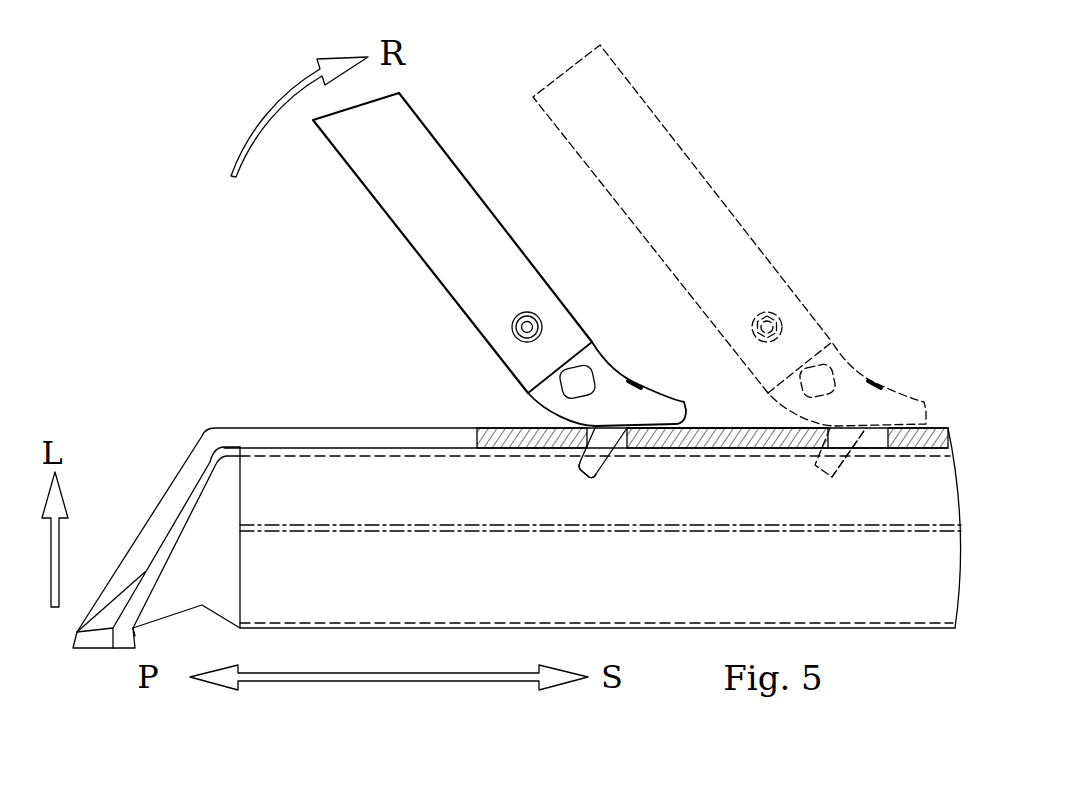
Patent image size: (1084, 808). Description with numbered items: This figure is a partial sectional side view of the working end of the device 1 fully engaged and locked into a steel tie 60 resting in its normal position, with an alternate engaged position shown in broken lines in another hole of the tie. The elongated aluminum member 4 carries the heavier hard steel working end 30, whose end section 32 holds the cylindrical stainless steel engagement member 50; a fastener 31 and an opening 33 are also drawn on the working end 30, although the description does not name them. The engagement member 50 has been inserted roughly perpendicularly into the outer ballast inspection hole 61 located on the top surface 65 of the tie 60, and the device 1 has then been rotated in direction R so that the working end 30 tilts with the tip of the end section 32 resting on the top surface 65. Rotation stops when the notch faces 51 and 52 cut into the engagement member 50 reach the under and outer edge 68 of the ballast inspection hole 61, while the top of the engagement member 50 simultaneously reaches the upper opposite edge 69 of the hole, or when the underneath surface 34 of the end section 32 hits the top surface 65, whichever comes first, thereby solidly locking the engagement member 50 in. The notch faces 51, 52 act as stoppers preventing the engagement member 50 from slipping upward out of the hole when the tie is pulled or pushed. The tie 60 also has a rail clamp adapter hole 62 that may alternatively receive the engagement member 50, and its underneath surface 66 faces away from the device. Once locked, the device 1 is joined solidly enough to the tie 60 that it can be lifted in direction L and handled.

The device 1 is at (481, 151).
The elongated member 4 is at (422, 207).
The working end 30 is at (626, 347).
The screw 31 is at (514, 323).
The end section 32 is at (649, 411).
The hook opening 33 is at (603, 392).
The underneath surface 34 is at (666, 433).
The engagement member 50 is at (585, 463).
The notch face 51 is at (828, 449).
The notch face 52 is at (831, 449).
The tie 60 is at (213, 440).
The ballast inspection hole 61 is at (621, 450).
The rail clamp adapter hole 62 is at (876, 450).
The top surface 65 is at (308, 419).
The underneath surface 66 is at (397, 458).
The under and outer edge 68 is at (590, 476).
The upper opposite edge 69 is at (629, 433).